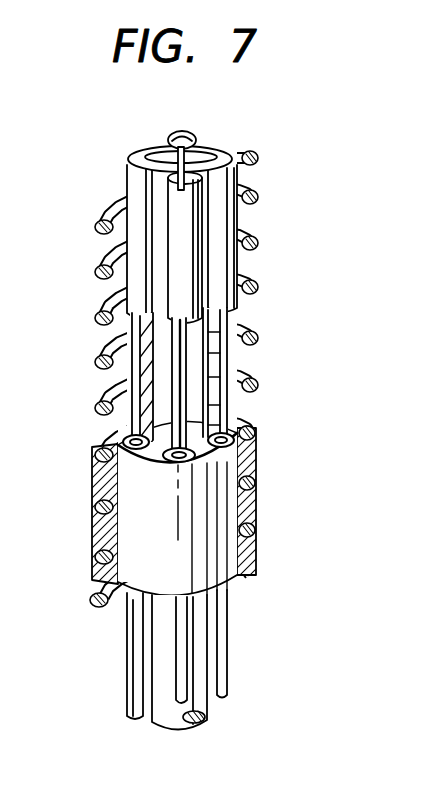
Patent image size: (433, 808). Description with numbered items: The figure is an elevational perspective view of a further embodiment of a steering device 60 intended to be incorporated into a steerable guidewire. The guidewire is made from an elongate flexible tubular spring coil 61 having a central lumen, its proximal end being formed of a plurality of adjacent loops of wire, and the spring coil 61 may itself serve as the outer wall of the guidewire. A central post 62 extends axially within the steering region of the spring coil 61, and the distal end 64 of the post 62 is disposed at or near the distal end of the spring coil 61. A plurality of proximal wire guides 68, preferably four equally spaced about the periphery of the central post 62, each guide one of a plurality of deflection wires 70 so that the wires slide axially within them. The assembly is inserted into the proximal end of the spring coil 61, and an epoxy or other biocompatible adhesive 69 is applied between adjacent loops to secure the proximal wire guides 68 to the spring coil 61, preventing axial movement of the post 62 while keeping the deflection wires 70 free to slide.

The steering device 60 is at (289, 307).
The spring coil 61 is at (257, 192).
The central post 62 is at (198, 412).
The distal end of post 64 is at (222, 143).
The proximal wire guides 68 is at (124, 443).
The adhesive 69 is at (254, 507).
The deflection wires 70 is at (128, 643).